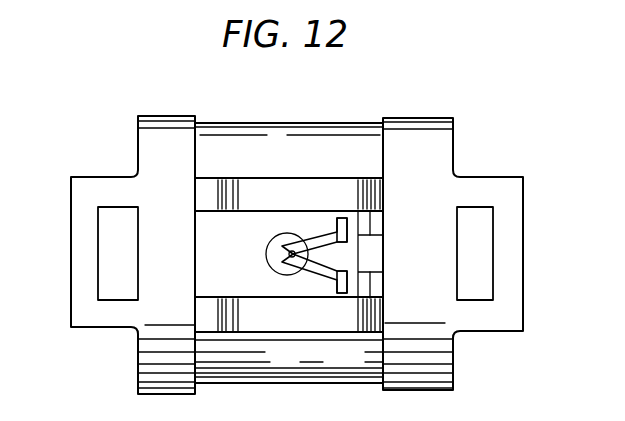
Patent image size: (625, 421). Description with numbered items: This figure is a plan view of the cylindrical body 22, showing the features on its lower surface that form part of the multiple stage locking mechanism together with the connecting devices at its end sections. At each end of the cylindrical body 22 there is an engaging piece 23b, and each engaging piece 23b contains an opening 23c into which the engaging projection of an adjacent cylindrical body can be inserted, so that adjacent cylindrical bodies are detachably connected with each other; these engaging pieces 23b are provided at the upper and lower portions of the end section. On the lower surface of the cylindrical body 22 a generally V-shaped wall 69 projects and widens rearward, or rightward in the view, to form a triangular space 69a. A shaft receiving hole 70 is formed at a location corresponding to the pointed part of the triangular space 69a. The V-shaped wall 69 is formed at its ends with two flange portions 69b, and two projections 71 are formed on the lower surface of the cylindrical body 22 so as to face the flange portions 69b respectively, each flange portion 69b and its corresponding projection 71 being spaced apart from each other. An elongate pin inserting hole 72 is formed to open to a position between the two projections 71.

The cylindrical body 22 is at (412, 118).
The engaging piece 23b is at (542, 293).
The opening 23c is at (538, 250).
The V-shaped wall 69 is at (317, 272).
The triangular space 69a is at (327, 248).
The flange portion 69b is at (339, 294).
The shaft receiving hole 70 is at (290, 255).
The projection 71 is at (400, 288).
The pin inserting hole 72 is at (372, 253).